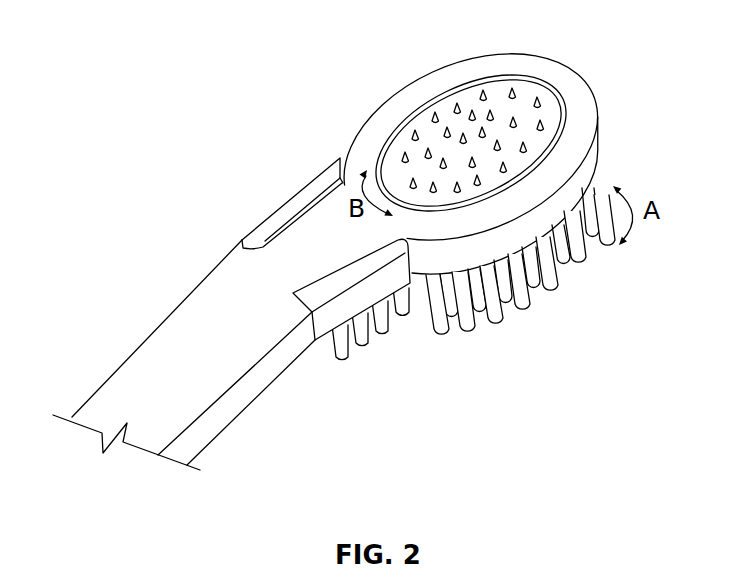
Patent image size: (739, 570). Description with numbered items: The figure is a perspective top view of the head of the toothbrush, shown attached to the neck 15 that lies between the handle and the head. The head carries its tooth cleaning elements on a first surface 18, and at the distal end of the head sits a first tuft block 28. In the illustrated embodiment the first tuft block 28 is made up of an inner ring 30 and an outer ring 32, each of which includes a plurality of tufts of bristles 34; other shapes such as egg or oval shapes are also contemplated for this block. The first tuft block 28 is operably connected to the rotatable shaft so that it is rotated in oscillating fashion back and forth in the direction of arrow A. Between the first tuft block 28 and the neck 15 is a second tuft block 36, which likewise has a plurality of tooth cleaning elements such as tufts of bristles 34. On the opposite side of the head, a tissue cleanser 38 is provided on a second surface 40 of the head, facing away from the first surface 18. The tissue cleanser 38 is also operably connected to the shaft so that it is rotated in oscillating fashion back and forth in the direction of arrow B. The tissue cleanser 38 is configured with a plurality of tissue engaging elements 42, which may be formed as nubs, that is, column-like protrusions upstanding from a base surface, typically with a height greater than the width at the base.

The neck 15 is at (135, 392).
The first surface 18 is at (585, 254).
The first tuft block 28 is at (600, 170).
The inner ring 30 is at (538, 279).
The outer ring 32 is at (523, 308).
The tufts of bristles 34 is at (480, 318).
The second tuft block 36 is at (362, 297).
The tissue cleanser 38 is at (526, 83).
The second surface 40 is at (576, 76).
The tissue engaging elements 42 is at (416, 132).